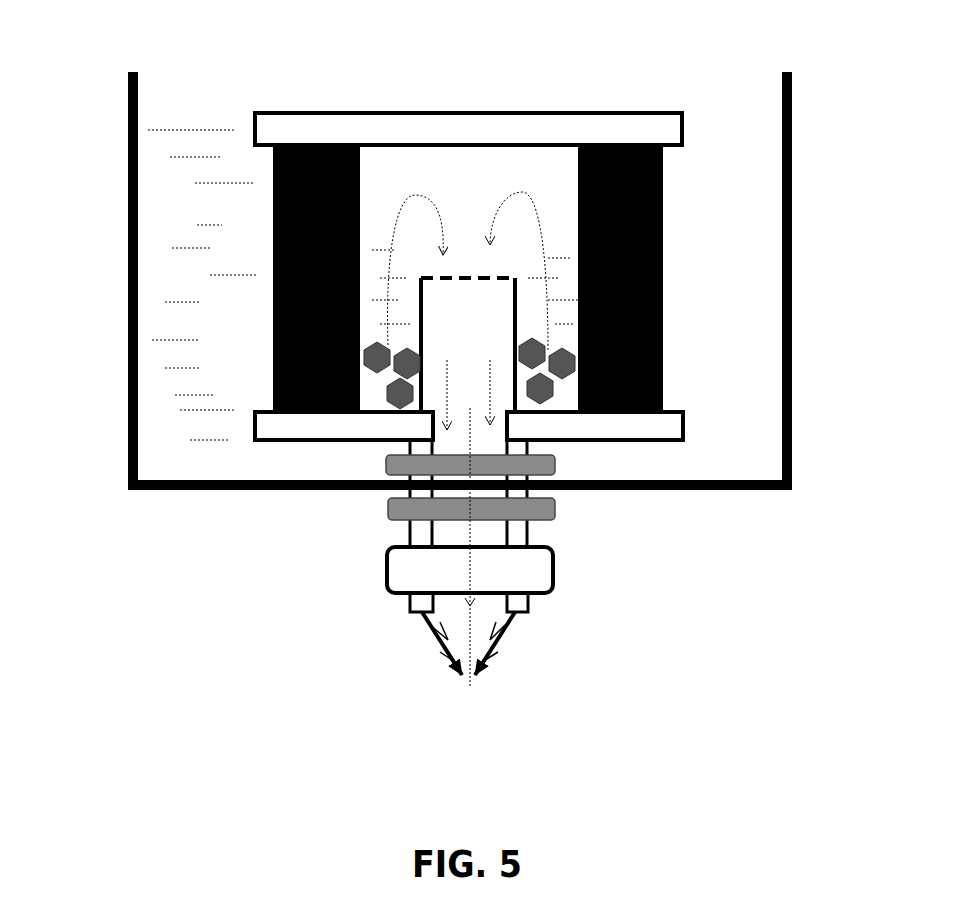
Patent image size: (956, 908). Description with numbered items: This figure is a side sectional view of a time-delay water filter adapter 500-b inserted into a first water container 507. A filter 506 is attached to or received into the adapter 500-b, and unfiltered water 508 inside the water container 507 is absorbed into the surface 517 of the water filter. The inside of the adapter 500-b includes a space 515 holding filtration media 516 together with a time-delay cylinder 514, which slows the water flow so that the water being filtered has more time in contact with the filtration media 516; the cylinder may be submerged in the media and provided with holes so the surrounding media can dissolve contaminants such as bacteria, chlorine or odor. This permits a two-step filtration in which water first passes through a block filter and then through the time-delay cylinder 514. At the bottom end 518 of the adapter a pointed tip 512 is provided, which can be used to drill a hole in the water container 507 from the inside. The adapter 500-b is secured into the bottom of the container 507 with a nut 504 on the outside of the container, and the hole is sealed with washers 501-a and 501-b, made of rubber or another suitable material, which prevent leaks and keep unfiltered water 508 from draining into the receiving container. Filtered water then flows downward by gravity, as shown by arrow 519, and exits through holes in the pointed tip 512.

The time-delay water filter adapter 500-b is at (245, 450).
The washer 501-a is at (558, 463).
The washer 501-b is at (558, 508).
The nut 504 is at (558, 570).
The filter 506 is at (668, 180).
The first water container 507 is at (794, 180).
The unfiltered water 508 is at (190, 157).
The pointed tip 512 is at (420, 645).
The time-delay cylinder 514 is at (478, 320).
The space 515 is at (385, 383).
The filtration media 516 is at (557, 386).
The surface of the water filter 517 is at (250, 358).
The bottom end 518 is at (690, 442).
The arrow 519 is at (472, 527).